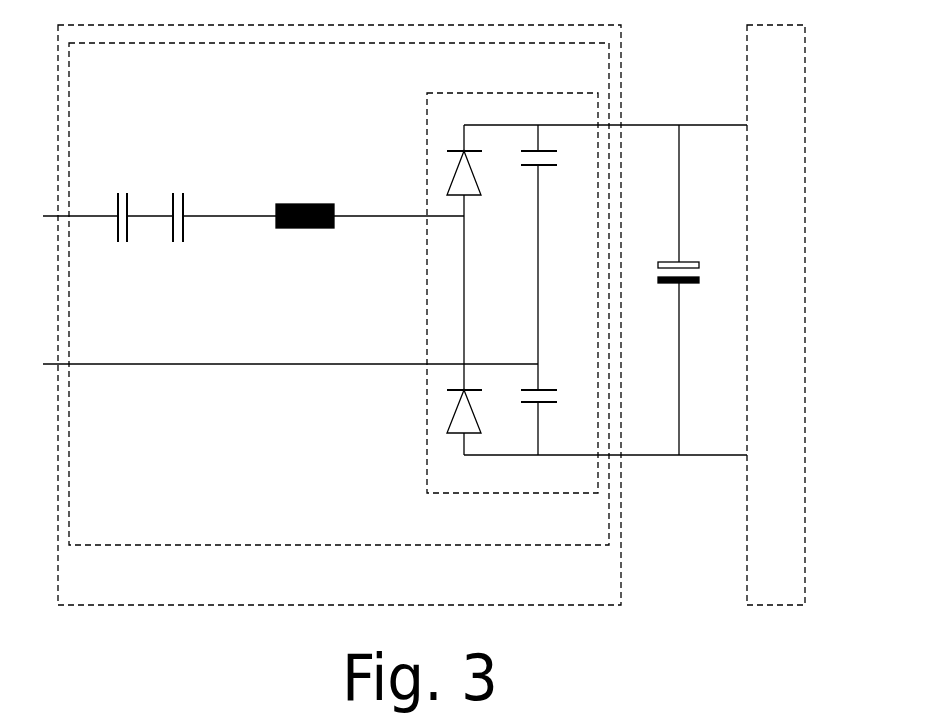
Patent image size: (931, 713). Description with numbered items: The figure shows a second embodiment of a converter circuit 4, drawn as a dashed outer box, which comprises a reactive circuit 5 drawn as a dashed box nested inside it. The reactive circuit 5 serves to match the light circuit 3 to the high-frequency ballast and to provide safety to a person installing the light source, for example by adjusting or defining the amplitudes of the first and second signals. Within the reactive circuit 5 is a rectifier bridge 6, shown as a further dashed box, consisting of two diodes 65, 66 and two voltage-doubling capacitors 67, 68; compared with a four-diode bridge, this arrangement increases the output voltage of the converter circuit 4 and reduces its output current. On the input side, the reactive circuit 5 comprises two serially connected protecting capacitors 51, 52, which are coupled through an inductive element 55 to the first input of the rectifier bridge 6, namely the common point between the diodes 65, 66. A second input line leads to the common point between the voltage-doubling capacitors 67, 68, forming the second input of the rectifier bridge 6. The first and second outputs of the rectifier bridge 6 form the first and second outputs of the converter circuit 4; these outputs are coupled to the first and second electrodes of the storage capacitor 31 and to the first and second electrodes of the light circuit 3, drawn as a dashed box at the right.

The light circuit 3 is at (775, 605).
The converter circuit 4 is at (103, 605).
The reactive circuit 5 is at (250, 545).
The rectifier bridge 6 is at (500, 493).
The storage capacitor 31 is at (689, 290).
The protecting capacitor 51 is at (122, 202).
The protecting capacitor 52 is at (178, 202).
The inductive element 55 is at (305, 196).
The diode 65 is at (479, 170).
The diode 66 is at (479, 335).
The voltage-doubling capacitor 67 is at (555, 244).
The voltage-doubling capacitor 68 is at (555, 409).